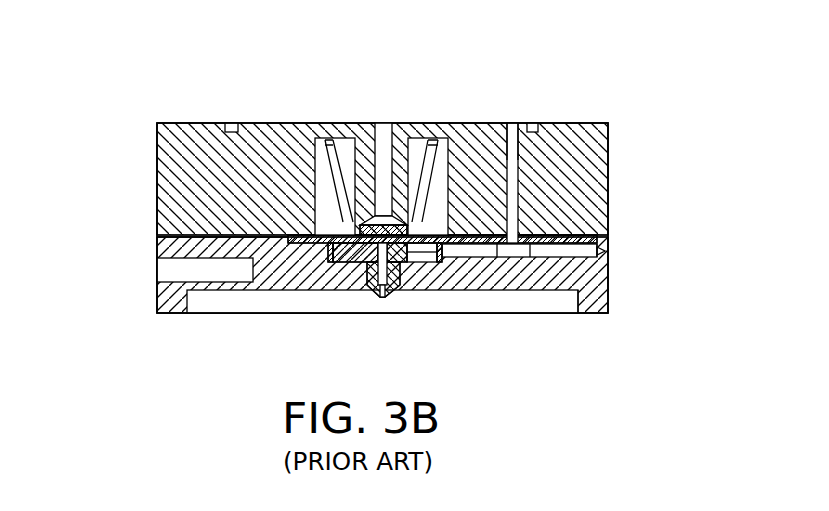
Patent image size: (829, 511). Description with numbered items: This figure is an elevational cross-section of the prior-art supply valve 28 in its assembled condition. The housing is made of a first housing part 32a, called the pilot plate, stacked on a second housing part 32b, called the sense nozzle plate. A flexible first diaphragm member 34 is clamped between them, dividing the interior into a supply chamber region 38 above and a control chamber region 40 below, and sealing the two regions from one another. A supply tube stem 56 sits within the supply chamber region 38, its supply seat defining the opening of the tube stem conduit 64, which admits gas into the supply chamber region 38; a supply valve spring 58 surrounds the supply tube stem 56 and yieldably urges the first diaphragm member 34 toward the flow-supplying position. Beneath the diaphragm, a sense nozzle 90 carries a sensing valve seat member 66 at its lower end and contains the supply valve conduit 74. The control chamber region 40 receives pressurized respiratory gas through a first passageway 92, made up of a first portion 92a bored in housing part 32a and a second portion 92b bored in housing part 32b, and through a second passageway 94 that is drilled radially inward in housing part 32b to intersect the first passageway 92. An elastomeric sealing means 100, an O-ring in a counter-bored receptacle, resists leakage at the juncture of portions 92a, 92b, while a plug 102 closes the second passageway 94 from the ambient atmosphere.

The supply valve 28 is at (149, 89).
The first housing part 32a is at (157, 150).
The second housing part 32b is at (624, 264).
The flexible first diaphragm member 34 is at (323, 220).
The supply chamber region 38 is at (323, 192).
The control chamber region 40 is at (400, 262).
The supply tube stem 56 is at (428, 150).
The supply valve spring 58 is at (325, 172).
The tube stem conduit 64 is at (383, 133).
The sensing valve seat member 66 is at (393, 288).
The supply valve conduit 74 is at (343, 272).
The sense nozzle 90 is at (358, 311).
The first passageway 92 is at (540, 155).
The first portion of first passageway 92a is at (512, 133).
The second portion of first passageway 92b is at (512, 250).
The second passageway 94 is at (578, 272).
The elastomeric sealing means 100 is at (535, 208).
The plug 102 is at (620, 228).